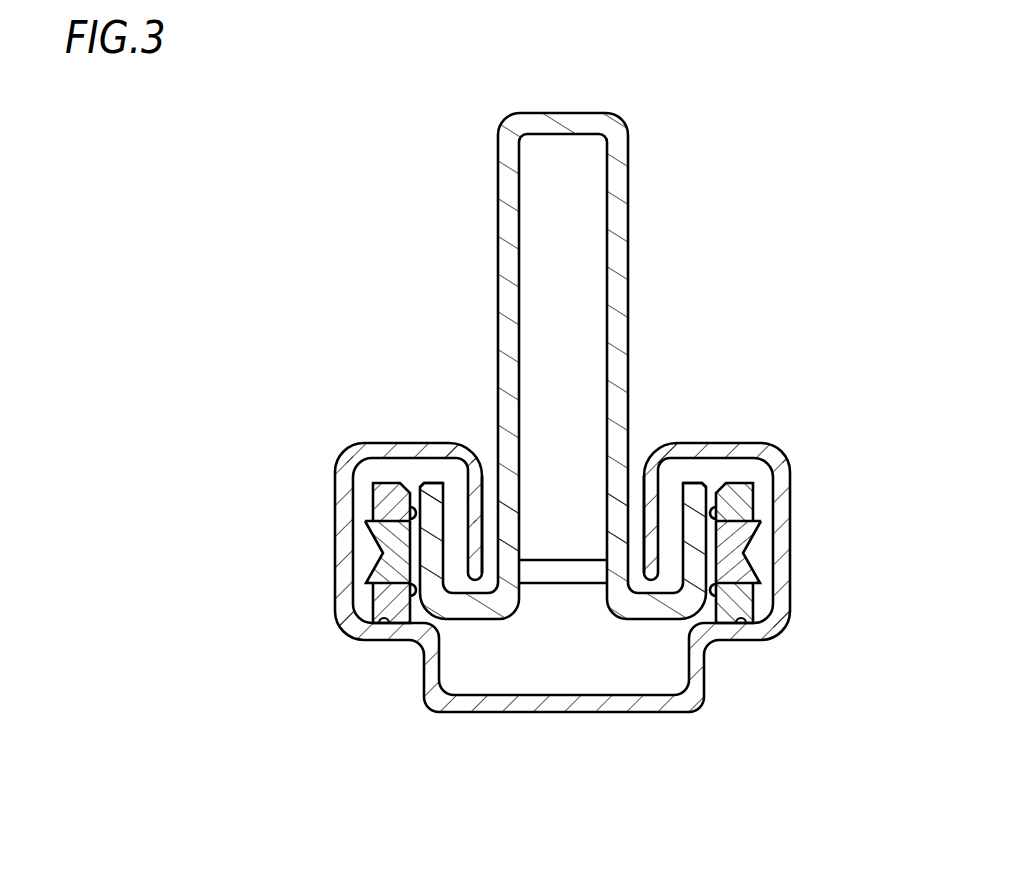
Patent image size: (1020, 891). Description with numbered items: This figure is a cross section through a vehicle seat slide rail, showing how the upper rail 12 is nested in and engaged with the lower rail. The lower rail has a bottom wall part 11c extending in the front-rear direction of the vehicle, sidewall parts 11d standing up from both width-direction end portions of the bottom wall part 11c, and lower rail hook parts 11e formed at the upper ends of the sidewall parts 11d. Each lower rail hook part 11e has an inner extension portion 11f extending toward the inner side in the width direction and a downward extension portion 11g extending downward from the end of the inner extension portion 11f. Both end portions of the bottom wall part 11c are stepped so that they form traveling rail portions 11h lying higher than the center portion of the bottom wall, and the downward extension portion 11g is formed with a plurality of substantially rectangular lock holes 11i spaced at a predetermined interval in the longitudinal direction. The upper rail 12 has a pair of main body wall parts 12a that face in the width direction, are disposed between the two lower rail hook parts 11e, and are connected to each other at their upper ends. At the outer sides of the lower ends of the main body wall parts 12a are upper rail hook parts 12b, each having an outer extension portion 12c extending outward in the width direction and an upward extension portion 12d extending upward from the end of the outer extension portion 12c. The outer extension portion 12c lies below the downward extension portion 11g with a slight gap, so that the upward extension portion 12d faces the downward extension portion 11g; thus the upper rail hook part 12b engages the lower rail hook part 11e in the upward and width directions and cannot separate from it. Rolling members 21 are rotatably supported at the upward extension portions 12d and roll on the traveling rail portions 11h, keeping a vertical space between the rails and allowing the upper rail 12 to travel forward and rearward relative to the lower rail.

The upper rail 12 is at (636, 132).
The main body wall parts 12a is at (629, 180).
The upper rail hook parts 12b is at (443, 630).
The outer extension portion 12c is at (500, 621).
The upward extension portion 12d is at (433, 483).
The bottom wall part 11c is at (545, 713).
The sidewall parts 11d is at (335, 560).
The lower rail hook parts 11e is at (468, 443).
The inner extension portion 11f is at (395, 443).
The downward extension portion 11g is at (485, 575).
The traveling rail portions 11h is at (384, 628).
The lock holes 11i is at (484, 508).
The rolling members 21 is at (373, 502).